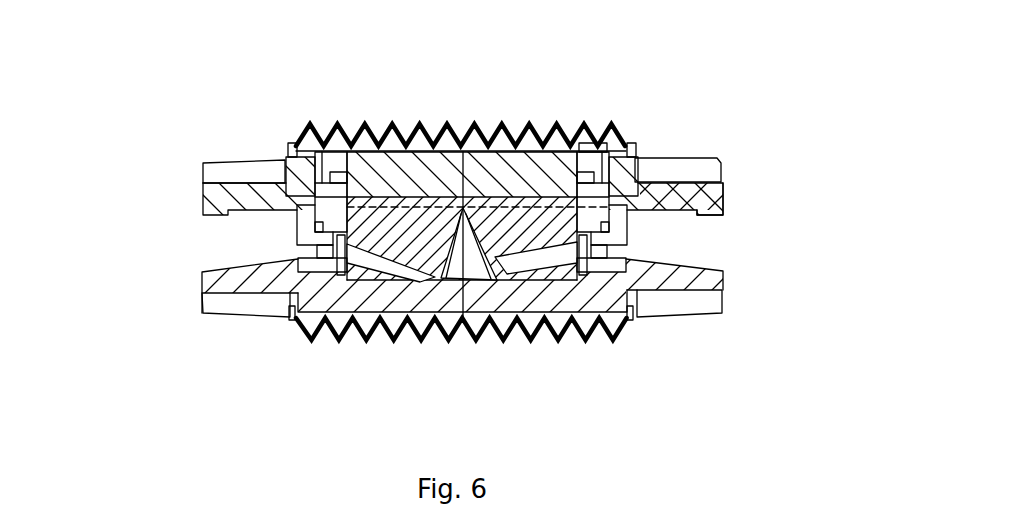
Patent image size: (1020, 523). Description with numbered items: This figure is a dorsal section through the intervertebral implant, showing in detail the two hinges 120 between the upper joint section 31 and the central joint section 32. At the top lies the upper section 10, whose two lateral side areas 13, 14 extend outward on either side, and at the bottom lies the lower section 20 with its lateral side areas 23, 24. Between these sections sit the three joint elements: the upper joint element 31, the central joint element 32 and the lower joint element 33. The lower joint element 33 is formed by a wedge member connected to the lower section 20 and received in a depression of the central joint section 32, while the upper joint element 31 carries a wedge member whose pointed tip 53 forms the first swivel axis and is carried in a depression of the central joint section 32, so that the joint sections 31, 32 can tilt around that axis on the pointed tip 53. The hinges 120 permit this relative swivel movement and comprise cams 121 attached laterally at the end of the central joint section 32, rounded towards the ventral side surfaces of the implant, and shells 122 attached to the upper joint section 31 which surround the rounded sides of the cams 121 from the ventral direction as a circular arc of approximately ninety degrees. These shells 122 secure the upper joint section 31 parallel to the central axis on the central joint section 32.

The upper section 10 is at (677, 190).
The lateral side area 13 is at (723, 193).
The lateral side area 14 is at (215, 187).
The lower section 20 is at (680, 290).
The lateral side area 23 is at (723, 282).
The lateral side area 24 is at (203, 296).
The upper joint element 31 is at (490, 195).
The central joint element 32 is at (350, 158).
The lower joint element 33 is at (470, 257).
The pointed tip 53 is at (586, 137).
The hinge 120 is at (270, 233).
The cam 121 is at (328, 209).
The shell 122 is at (315, 231).